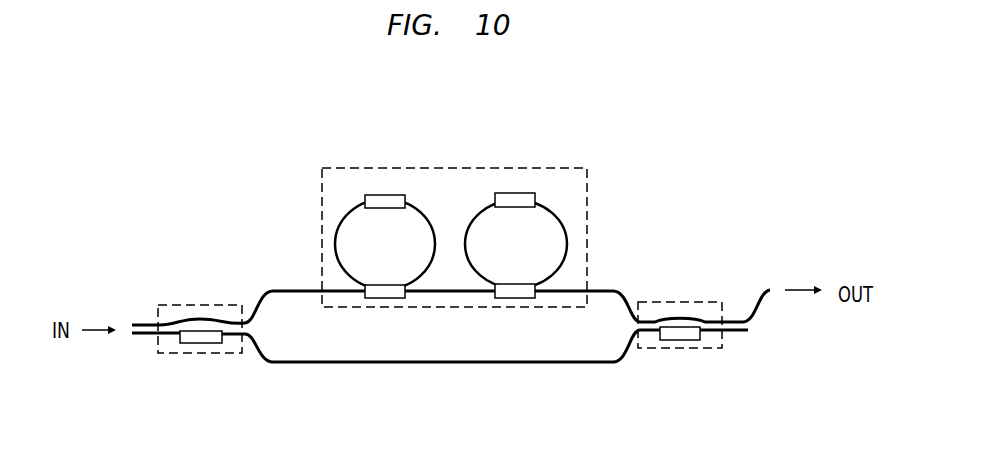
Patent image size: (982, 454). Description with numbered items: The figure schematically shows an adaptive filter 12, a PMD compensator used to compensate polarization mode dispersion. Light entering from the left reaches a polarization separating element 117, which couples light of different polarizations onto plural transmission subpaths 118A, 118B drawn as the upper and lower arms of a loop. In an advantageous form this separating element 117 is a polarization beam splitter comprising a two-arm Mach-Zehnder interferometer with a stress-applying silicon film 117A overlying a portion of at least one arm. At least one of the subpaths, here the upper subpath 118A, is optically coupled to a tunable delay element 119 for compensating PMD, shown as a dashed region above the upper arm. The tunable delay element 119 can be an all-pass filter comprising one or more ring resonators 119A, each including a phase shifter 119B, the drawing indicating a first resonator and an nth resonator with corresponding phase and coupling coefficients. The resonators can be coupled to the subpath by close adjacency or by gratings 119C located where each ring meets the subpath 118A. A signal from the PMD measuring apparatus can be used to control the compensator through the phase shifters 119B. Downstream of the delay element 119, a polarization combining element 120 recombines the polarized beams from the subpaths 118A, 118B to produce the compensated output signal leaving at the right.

The adaptive filter 12 is at (240, 225).
The polarization separating element 117 is at (182, 295).
The stress-applying silicon film 117A is at (204, 343).
The transmission subpath 118A is at (272, 291).
The transmission subpath 118B is at (373, 365).
The tunable delay element 119 is at (565, 168).
The ring resonator 119A is at (480, 205).
The phase shifter 119B is at (378, 195).
The grating 119C is at (518, 298).
The polarization combining element 120 is at (698, 302).